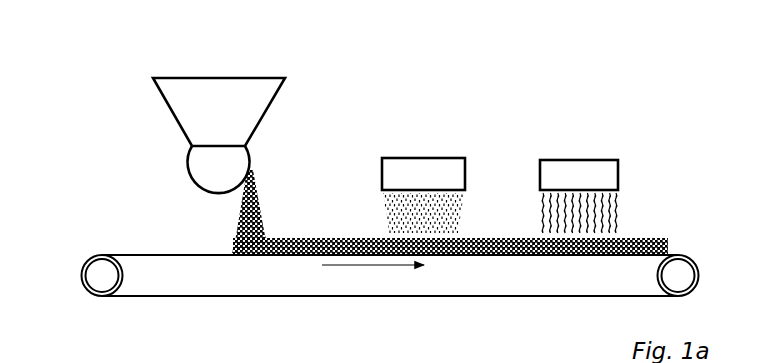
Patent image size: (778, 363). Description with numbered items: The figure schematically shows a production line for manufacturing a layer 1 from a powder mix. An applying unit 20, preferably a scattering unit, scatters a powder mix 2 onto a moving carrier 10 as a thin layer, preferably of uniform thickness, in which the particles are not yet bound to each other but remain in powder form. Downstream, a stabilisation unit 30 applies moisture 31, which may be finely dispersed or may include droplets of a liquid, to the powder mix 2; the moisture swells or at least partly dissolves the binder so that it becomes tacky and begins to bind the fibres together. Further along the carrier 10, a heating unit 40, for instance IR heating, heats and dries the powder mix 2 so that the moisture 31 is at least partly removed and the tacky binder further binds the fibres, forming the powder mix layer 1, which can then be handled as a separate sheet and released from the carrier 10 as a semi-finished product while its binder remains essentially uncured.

The layer 1 is at (636, 228).
The powder mix 2 is at (256, 176).
The carrier 10 is at (143, 254).
The applying unit 20 is at (164, 113).
The stabilisation unit 30 is at (406, 157).
The moisture 31 is at (440, 204).
The heating unit 40 is at (580, 154).